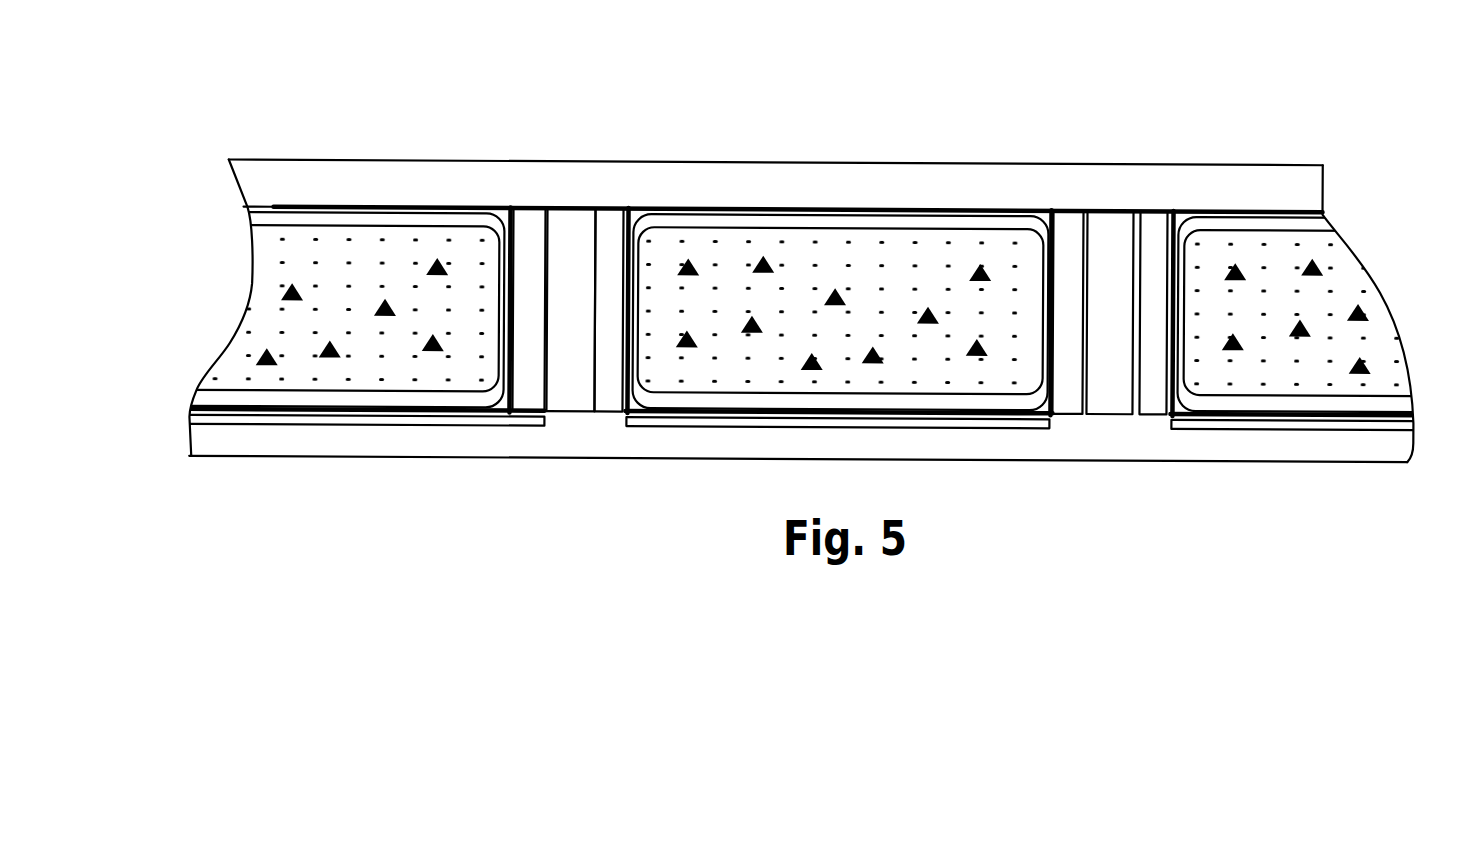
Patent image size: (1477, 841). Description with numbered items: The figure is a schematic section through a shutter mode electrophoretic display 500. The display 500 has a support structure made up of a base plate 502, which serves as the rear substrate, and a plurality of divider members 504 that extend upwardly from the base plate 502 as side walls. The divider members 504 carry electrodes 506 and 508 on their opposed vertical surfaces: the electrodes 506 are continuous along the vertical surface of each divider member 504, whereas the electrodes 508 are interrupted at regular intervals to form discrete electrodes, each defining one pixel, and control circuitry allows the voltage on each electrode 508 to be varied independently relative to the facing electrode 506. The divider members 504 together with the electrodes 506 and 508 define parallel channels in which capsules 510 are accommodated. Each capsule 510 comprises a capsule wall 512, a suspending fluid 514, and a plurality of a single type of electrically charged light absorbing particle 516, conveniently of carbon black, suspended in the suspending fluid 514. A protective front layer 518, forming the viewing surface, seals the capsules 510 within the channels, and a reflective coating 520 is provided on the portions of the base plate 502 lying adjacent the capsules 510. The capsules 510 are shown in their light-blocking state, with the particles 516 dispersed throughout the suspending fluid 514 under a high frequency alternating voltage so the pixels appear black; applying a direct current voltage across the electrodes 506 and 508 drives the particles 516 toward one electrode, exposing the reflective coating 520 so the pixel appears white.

The display 500 is at (203, 202).
The base plate 502 is at (982, 445).
The divider members 504 is at (572, 308).
The electrodes 506 is at (530, 312).
The electrodes 508 is at (609, 310).
The capsules 510 is at (1379, 267).
The capsule wall 512 is at (768, 219).
The suspending fluid 514 is at (833, 257).
The light absorbing particle 516 is at (928, 312).
The protective front layer 518 is at (348, 185).
The reflective coating 520 is at (1202, 423).